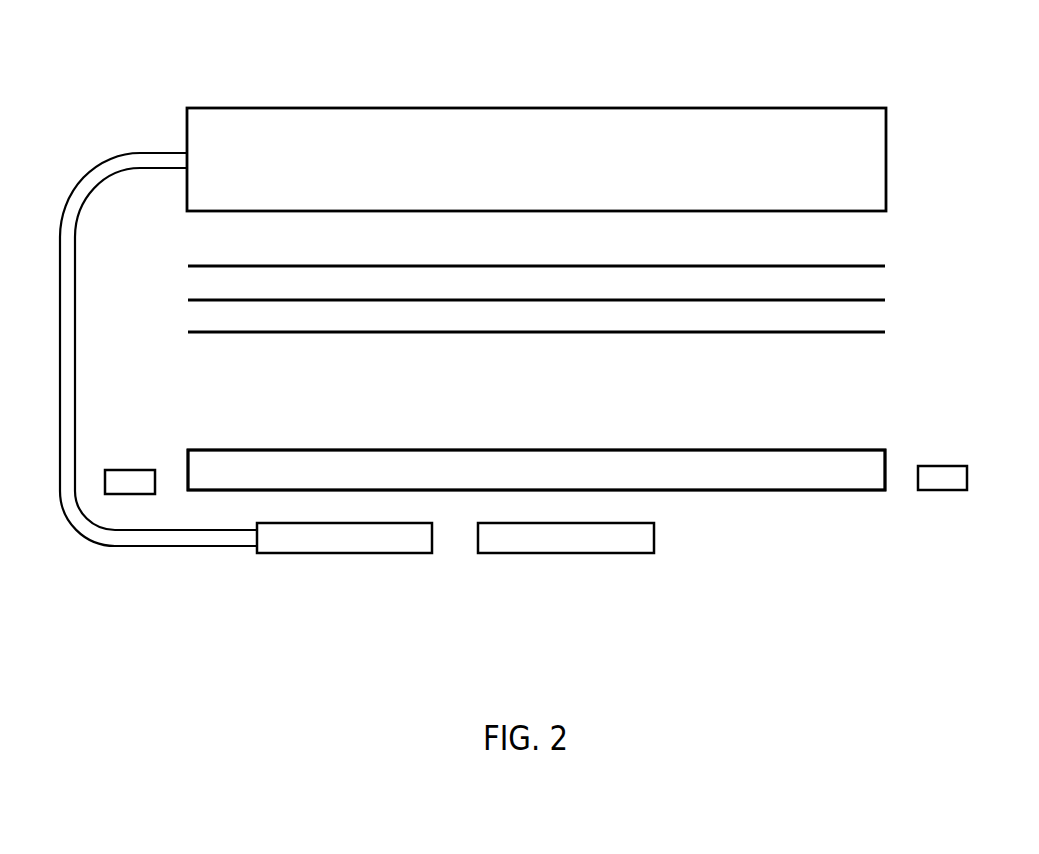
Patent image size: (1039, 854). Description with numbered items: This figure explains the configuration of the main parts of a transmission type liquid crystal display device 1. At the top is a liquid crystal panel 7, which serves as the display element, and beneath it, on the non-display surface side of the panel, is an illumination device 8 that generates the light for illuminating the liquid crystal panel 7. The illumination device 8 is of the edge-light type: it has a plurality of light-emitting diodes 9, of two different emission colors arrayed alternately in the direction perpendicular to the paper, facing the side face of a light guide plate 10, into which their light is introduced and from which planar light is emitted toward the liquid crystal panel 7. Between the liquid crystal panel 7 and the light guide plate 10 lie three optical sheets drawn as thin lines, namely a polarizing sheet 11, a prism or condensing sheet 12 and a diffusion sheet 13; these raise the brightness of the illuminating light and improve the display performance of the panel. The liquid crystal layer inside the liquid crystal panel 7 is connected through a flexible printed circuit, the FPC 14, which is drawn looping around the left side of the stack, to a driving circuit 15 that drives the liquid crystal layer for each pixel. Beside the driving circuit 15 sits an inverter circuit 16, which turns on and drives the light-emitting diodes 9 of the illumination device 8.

The display device 1 is at (916, 66).
The liquid crystal panel 7 is at (887, 157).
The illumination device 8 is at (838, 426).
The light-emitting diodes 9 is at (130, 470).
The light guide plate 10 is at (784, 474).
The polarizing sheet 11 is at (870, 265).
The prism sheet 12 is at (870, 299).
The diffusion sheet 13 is at (865, 332).
The FPC 14 is at (181, 538).
The driving circuit 15 is at (346, 540).
The inverter circuit 16 is at (567, 540).